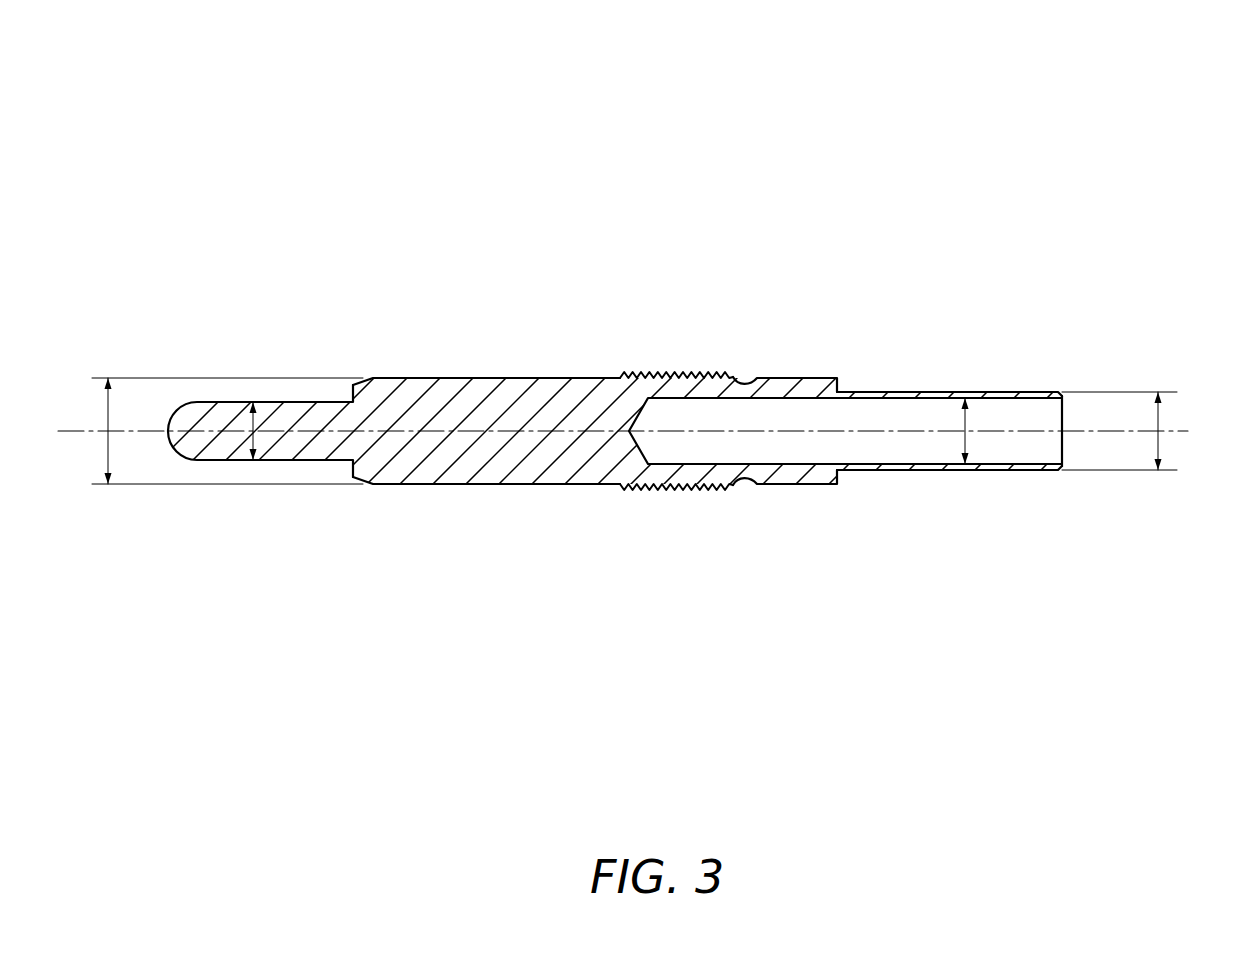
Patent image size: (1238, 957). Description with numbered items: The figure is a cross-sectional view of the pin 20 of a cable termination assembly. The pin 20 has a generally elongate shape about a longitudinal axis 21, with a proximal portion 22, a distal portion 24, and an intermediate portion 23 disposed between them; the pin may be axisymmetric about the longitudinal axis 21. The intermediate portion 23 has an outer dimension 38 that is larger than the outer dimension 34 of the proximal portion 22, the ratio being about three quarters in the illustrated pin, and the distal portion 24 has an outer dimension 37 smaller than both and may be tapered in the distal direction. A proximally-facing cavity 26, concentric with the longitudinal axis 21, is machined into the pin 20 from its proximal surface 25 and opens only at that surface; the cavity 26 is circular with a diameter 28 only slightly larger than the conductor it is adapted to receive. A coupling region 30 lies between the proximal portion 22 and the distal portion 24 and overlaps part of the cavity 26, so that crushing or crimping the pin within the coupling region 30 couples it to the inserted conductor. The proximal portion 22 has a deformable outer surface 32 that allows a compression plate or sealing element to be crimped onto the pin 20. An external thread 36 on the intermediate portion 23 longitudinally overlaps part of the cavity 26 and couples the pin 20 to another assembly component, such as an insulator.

The pin 20 is at (980, 118).
The longitudinal axis 21 is at (433, 431).
The proximal portion 22 is at (1000, 388).
The intermediate portion 23 is at (512, 353).
The distal portion 24 is at (218, 376).
The proximal surface 25 is at (1064, 468).
The proximally-facing cavity 26 is at (1035, 420).
The diameter 28 is at (966, 447).
The coupling region 30 is at (778, 376).
The outer surface 32 is at (883, 391).
The outer dimension 34 is at (1159, 452).
The external thread 36 is at (703, 377).
The outer dimension 37 is at (258, 445).
The outer dimension 38 is at (111, 452).